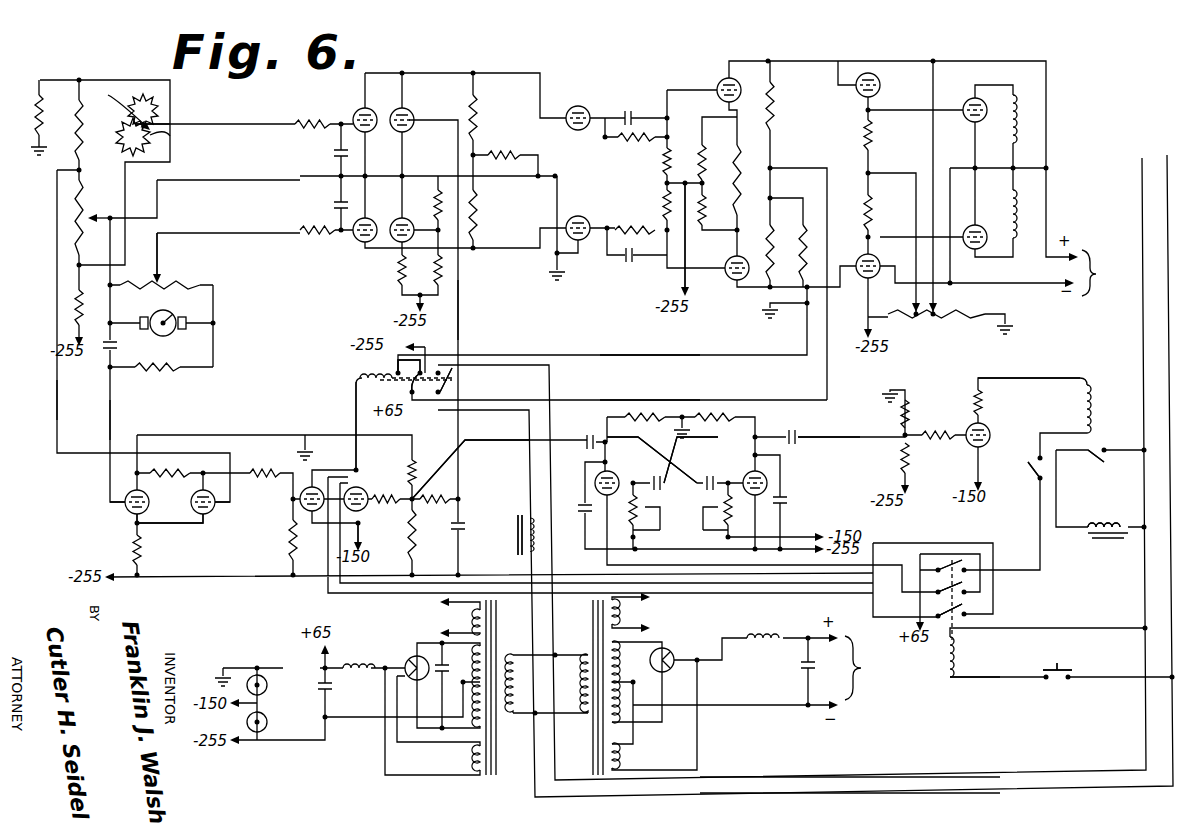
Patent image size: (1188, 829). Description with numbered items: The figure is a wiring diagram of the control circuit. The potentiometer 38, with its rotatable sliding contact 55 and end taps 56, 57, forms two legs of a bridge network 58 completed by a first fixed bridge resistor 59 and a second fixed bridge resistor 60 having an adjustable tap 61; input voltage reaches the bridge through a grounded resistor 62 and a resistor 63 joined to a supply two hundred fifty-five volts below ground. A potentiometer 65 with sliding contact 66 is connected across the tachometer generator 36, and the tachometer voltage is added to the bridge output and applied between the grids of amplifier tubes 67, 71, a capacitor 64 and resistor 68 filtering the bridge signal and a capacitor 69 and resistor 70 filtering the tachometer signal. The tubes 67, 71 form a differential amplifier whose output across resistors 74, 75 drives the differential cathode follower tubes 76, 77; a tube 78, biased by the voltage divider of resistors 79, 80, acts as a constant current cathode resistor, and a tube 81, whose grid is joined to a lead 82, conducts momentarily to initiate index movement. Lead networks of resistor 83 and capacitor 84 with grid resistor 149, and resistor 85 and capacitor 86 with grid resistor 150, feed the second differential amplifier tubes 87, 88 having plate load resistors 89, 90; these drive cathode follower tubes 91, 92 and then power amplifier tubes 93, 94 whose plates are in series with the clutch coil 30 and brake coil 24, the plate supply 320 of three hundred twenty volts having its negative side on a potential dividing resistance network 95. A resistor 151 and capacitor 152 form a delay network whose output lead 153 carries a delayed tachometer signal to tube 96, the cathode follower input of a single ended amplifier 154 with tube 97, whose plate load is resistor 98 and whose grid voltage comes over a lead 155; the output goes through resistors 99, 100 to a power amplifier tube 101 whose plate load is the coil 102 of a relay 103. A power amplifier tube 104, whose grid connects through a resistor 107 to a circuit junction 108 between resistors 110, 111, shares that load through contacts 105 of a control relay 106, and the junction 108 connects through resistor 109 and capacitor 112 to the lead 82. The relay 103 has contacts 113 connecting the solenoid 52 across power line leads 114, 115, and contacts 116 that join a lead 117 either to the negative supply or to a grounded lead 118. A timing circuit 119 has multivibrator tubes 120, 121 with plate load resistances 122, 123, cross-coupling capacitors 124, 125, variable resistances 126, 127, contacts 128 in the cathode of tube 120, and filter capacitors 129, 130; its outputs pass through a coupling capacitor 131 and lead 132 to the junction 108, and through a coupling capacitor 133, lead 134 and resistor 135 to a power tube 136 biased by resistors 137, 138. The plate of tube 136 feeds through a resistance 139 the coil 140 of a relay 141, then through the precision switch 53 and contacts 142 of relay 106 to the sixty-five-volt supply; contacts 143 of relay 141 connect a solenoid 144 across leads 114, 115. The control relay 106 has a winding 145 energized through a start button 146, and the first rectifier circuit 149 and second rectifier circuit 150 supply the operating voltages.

The brake coil 24 is at (1020, 205).
The clutch coil 30 is at (1020, 110).
The tachometer generator 36 is at (172, 316).
The potentiometer 38 is at (122, 150).
The solenoid 52 is at (514, 535).
The precision switch 53 is at (1030, 470).
The rotatable sliding contact 55 is at (123, 108).
The end tap 56 is at (158, 110).
The end tap 57 is at (165, 140).
The bridge network 58 is at (118, 188).
The first fixed bridge resistor 59 is at (71, 110).
The second fixed bridge resistor 60 is at (72, 208).
The adjustable tap 61 is at (95, 216).
The grounded resistor 62 is at (38, 110).
The resistor 63 is at (70, 294).
The capacitor 64 is at (334, 153).
The potentiometer 65 is at (188, 278).
The sliding contact 66 is at (162, 250).
The amplifier tube 67 is at (356, 246).
The resistor 68 is at (302, 118).
The capacitor 69 is at (334, 205).
The resistor 70 is at (314, 241).
The amplifier tube 71 is at (360, 110).
The resistor 74 is at (483, 113).
The resistor 75 is at (483, 208).
The tube 76 is at (588, 104).
The tube 77 is at (578, 216).
The tube 78 is at (408, 218).
The resistor 79 is at (452, 273).
The resistor 80 is at (444, 192).
The tube 81 is at (410, 112).
The lead 82 is at (462, 307).
The resistor 83 is at (642, 160).
The capacitor 84 is at (634, 108).
The resistor 85 is at (642, 225).
The capacitor 86 is at (632, 265).
The tube 87 is at (725, 80).
The tube 88 is at (732, 282).
The plate load resistor 89 is at (780, 100).
The plate load resistor 90 is at (766, 240).
The tube 91 is at (882, 76).
The tube 92 is at (858, 258).
The power amplifier tube 93 is at (968, 102).
The power amplifier tube 94 is at (970, 226).
The potential dividing resistance network 95 is at (958, 326).
The tube 96 is at (126, 510).
The tube 97 is at (215, 508).
The resistor 98 is at (165, 480).
The resistor 99 is at (276, 480).
The resistor 100 is at (290, 548).
The power amplifier tube 101 is at (288, 522).
The coil 102 is at (362, 384).
The relay 103 is at (383, 368).
The power amplifier tube 104 is at (364, 488).
The contacts 105 is at (970, 606).
The control relay 106 is at (945, 672).
The resistor 107 is at (380, 504).
The circuit junction 108 is at (420, 505).
The resistor 109 is at (440, 494).
The resistor 110 is at (416, 466).
The resistor 111 is at (400, 540).
The capacitor 112 is at (465, 525).
The normally open contacts 113 is at (452, 382).
The power line lead 114 is at (868, 752).
The power line lead 115 is at (966, 780).
The contacts 116 is at (416, 400).
The lead 117 is at (655, 380).
The lead 118 is at (650, 338).
The timing circuit 119 is at (645, 460).
The tube 120 is at (595, 478).
The tube 121 is at (768, 474).
The plate load resistance 122 is at (648, 412).
The plate load resistance 123 is at (736, 412).
The capacitor 124 is at (700, 476).
The capacitor 125 is at (650, 480).
The variable resistance 126 is at (718, 518).
The variable resistance 127 is at (663, 510).
The contacts 128 is at (970, 588).
The filter capacitor 129 is at (582, 515).
The filter capacitor 130 is at (788, 500).
The output coupling capacitor 131 is at (592, 430).
The lead 132 is at (468, 440).
The output coupling capacitor 133 is at (795, 432).
The lead 134 is at (826, 440).
The resistor 135 is at (932, 442).
The power tube 136 is at (988, 430).
The resistor 137 is at (940, 390).
The resistor 138 is at (902, 470).
The resistance 139 is at (986, 400).
The coil 140 is at (1092, 400).
The relay 141 is at (1118, 355).
The normally open contacts 142 is at (955, 530).
The normally open contacts 143 is at (1094, 448).
The solenoid 144 is at (1085, 532).
The winding 145 is at (958, 653).
The start button 146 is at (1060, 680).
The grid resistor 149 is at (662, 178).
The grid resistor 150 is at (682, 266).
The resistor 151 is at (160, 372).
The capacitor 152 is at (105, 355).
The output lead 153 is at (116, 418).
The single ended amplifier 154 is at (202, 552).
The lead 155 is at (56, 395).
The 320 volt supply 320 is at (997, 466).